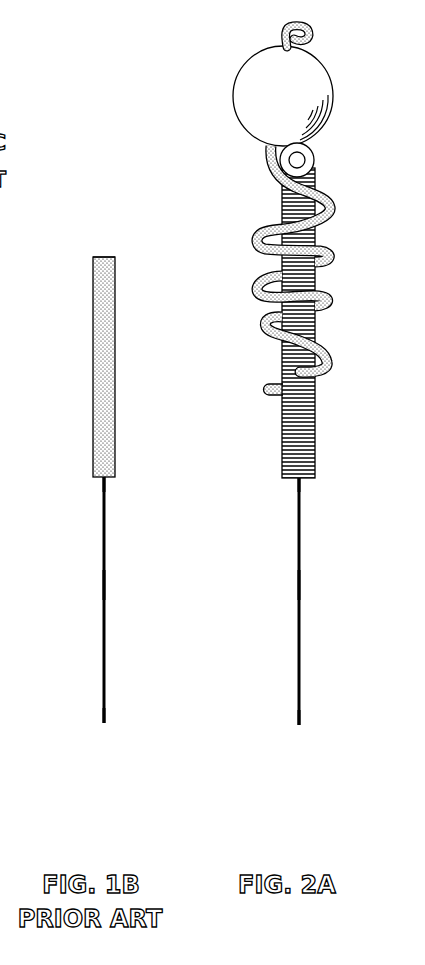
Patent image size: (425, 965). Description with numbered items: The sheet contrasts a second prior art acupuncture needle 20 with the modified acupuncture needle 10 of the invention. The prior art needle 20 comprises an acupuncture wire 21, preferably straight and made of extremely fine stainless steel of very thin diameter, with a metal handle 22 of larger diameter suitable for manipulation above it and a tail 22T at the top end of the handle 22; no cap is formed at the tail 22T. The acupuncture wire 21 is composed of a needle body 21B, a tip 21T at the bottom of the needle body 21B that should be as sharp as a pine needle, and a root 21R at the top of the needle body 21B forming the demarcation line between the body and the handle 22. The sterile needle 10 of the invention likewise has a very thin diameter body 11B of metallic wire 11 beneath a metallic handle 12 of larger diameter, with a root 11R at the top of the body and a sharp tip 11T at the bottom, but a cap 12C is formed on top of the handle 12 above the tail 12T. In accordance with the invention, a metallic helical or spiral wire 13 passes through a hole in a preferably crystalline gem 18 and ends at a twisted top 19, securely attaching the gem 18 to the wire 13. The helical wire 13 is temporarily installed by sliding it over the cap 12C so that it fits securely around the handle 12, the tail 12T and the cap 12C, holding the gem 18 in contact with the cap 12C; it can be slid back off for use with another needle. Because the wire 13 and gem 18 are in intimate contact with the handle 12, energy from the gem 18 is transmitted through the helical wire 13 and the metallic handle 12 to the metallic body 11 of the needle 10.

In FIG. 2A, the acupuncture needle 10 is at (302, 429).
In FIG. 2A, the wire 11 is at (311, 643).
In FIG. 2A, the root 11R is at (297, 486).
In FIG. 2A, the body 11B is at (298, 585).
In FIG. 2A, the tip 11T is at (298, 727).
In FIG. 2A, the handle 12 is at (281, 359).
In FIG. 2A, the cap 12C is at (315, 159).
In FIG. 2A, the tail 12T is at (326, 186).
In FIG. 2A, the helical or spiral wire 13 is at (316, 357).
In FIG. 2A, the gem 18 is at (328, 66).
In FIG. 2A, the twisted top 19 is at (280, 32).
In FIG. 1B, the second prior art acupuncture needle 20 is at (109, 546).
In FIG. 1B, the acupuncture wire 21 is at (117, 643).
In FIG. 1B, the root 21R is at (102, 485).
In FIG. 1B, the needle body 21B is at (104, 584).
In FIG. 1B, the tip 21T is at (104, 725).
In FIG. 1B, the handle 22 is at (95, 355).
In FIG. 1B, the tail 22T is at (124, 273).